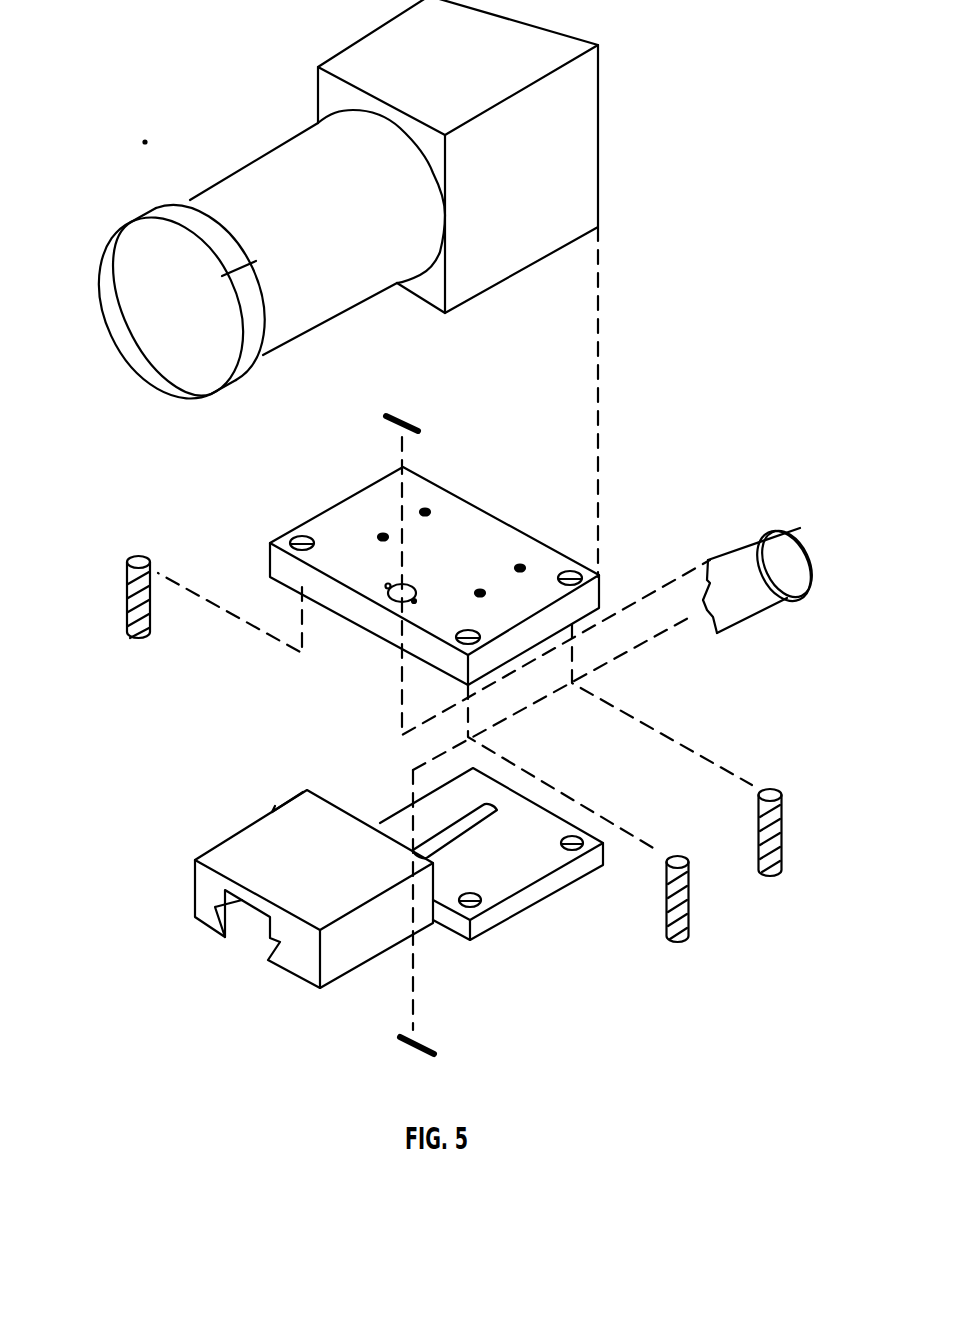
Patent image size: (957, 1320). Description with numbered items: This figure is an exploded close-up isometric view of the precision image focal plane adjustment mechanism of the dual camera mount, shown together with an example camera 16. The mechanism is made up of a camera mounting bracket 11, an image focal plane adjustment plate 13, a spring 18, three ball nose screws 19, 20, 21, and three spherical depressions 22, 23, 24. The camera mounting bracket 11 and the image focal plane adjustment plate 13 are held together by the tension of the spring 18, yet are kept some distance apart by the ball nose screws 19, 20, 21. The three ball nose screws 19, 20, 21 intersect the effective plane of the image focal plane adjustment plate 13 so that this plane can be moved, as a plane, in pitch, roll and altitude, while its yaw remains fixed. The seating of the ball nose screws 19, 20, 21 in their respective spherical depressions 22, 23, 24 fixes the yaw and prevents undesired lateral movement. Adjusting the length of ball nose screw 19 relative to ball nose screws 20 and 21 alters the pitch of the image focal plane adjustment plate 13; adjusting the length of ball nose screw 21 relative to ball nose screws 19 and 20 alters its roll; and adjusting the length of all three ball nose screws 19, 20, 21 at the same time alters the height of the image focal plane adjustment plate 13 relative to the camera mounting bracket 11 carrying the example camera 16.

The camera mounting bracket 11 is at (290, 983).
The image focal plane adjustment plate 13 is at (477, 497).
The example camera 16 is at (608, 133).
The spring 18 is at (823, 550).
The ball nose screw 19 is at (788, 828).
The ball nose screw 20 is at (700, 912).
The ball nose screw 21 is at (113, 605).
The spherical depression 22 is at (577, 848).
The spherical depression 23 is at (480, 907).
The spherical depression 24 is at (416, 908).